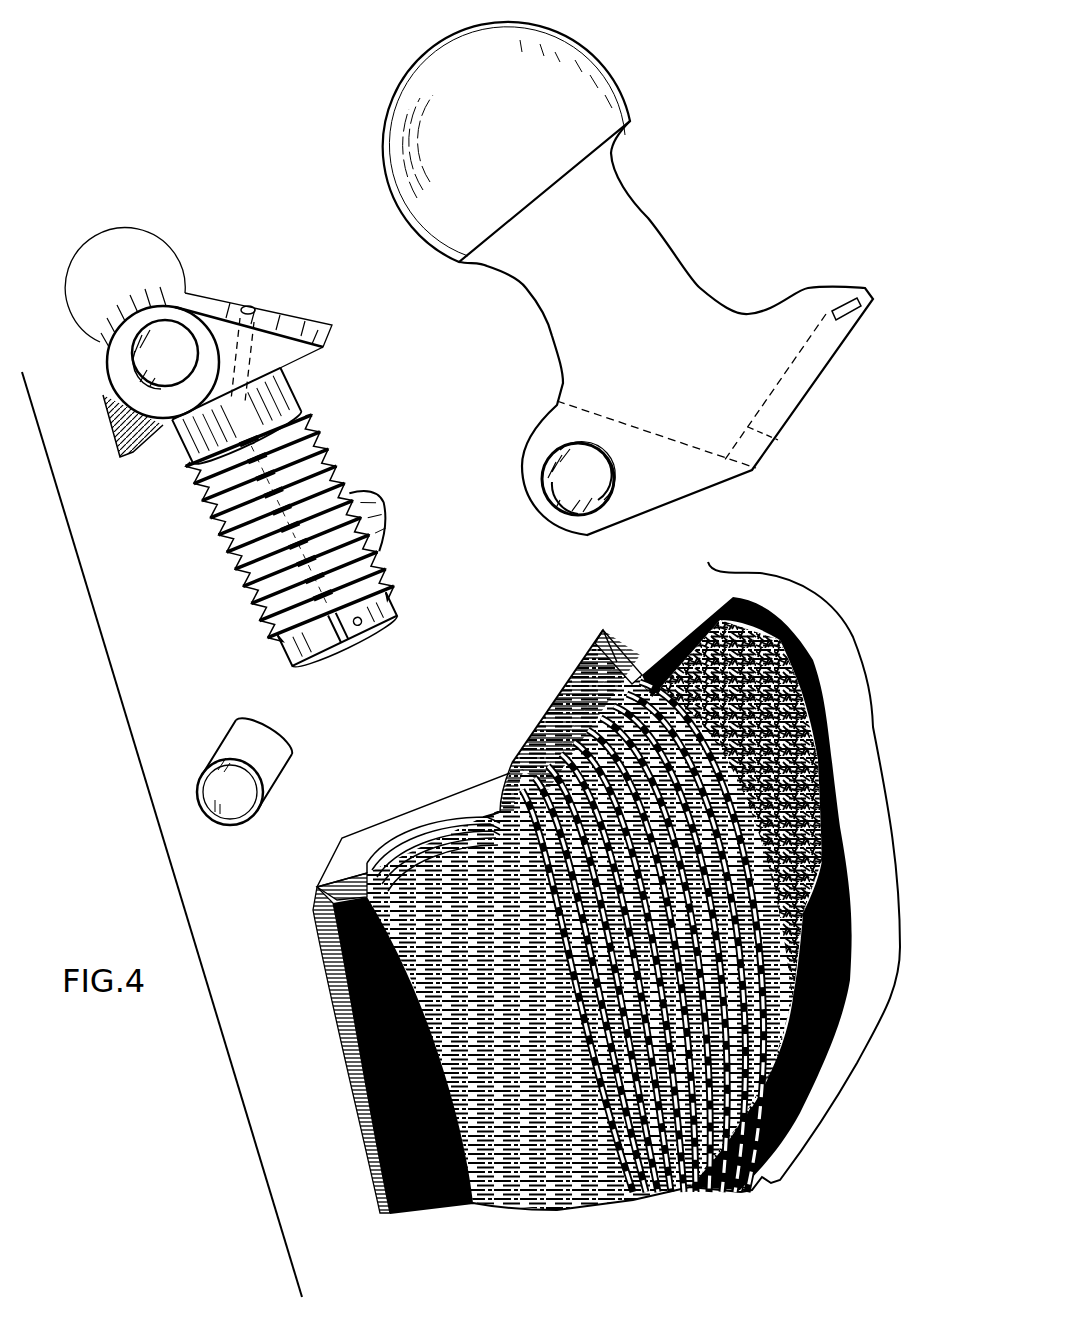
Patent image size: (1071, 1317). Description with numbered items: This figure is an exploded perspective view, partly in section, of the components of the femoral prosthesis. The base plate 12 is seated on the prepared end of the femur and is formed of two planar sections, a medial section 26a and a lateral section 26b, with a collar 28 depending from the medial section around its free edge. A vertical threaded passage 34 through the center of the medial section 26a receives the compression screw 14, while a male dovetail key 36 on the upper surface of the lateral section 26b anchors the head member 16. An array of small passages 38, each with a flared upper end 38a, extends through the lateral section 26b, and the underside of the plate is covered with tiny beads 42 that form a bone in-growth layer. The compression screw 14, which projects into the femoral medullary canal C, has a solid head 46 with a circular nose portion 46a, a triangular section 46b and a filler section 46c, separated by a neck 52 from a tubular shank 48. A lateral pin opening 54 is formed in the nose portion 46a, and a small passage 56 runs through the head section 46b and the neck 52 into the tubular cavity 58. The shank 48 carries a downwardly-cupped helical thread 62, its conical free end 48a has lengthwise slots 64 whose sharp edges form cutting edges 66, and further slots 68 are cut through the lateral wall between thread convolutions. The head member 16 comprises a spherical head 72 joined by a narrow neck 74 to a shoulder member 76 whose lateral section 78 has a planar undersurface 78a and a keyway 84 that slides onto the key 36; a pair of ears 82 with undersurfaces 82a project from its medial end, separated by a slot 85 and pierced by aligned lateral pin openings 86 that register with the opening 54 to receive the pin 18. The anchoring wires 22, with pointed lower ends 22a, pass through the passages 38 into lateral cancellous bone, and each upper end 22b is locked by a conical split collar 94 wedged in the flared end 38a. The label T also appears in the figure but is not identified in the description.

The base plate 12 is at (303, 887).
The compression screw 14 is at (148, 262).
The head member 16 is at (647, 289).
The pin 18 is at (217, 779).
The anchoring wires 22 is at (586, 895).
The lower end of anchoring wire 22a is at (640, 1200).
The upper end of anchoring wire 22b is at (547, 708).
The medial section 26a is at (313, 902).
The lateral section 26b is at (617, 657).
The collar 28 is at (333, 942).
The vertical threaded passage 34 is at (415, 833).
The key 36 is at (602, 630).
The small passages 38 is at (560, 683).
The flared upper end of passage 38a is at (572, 655).
The tiny beads 42 is at (513, 790).
The head of compression screw 46 is at (220, 364).
The nose portion 46a is at (105, 346).
The triangular section 46b is at (333, 338).
The filler section 46c is at (163, 350).
The shank 48 is at (281, 531).
The free end of shank 48a is at (339, 629).
The neck 52 is at (238, 419).
The lateral pin opening 54 is at (113, 378).
The small passage 56 is at (248, 308).
The tubular cavity 58 is at (290, 527).
The helical thread 62 is at (291, 530).
The lengthwise slots 64 is at (338, 627).
The cutting edges 66 is at (357, 621).
The slots 68 is at (375, 517).
The head 72 is at (620, 76).
The neck 74 is at (669, 153).
The shoulder member 76 is at (782, 305).
The lateral section of shoulder 78 is at (847, 280).
The undersurface of shoulder section 78a is at (808, 409).
The ears 82 is at (546, 456).
The undersurfaces of ears 82a is at (617, 529).
The keyway 84 is at (866, 304).
The slot between ears 85 is at (552, 457).
The lateral pin openings 86 is at (587, 448).
The conical split collar 94 is at (513, 760).
The soft tissue T is at (708, 563).
The femoral medullary canal C is at (558, 1207).